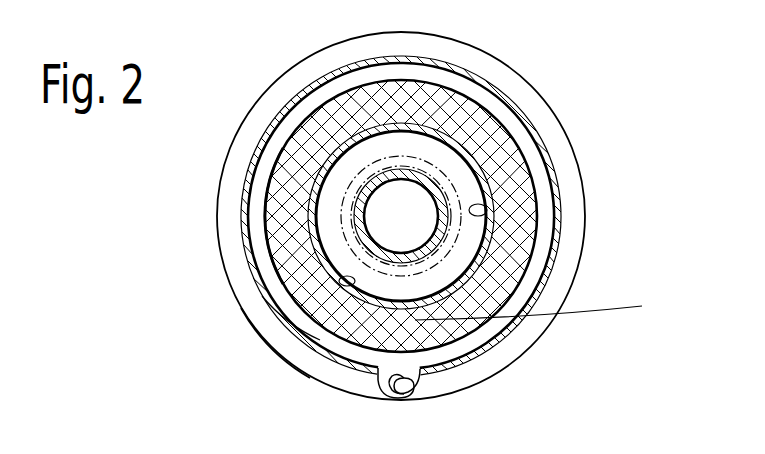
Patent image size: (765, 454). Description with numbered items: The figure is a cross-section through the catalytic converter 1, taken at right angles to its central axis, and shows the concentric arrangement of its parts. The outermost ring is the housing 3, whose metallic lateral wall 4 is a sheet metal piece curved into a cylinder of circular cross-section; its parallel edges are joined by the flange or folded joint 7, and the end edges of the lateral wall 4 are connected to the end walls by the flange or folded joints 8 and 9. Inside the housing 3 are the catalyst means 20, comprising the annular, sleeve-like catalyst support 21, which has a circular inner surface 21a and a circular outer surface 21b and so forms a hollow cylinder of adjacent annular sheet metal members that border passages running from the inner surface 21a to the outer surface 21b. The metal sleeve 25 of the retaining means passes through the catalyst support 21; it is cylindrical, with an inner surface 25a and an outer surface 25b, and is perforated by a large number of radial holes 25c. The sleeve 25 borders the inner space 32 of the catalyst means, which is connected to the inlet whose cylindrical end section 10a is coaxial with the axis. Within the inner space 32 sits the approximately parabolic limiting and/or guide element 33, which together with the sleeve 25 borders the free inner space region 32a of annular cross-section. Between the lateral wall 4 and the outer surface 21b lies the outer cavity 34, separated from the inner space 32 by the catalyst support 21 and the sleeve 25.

The catalytic converter 1 is at (303, 51).
The housing 3 is at (271, 81).
The lateral wall 4 is at (250, 185).
The flange joint and/or folded joint 7 is at (378, 398).
The flange joint and/or folded joint 8 is at (245, 120).
The flange joint and/or folded joint 9 is at (250, 213).
The cylindrical end section 10a is at (455, 178).
The catalyst means 20 is at (258, 241).
The catalyst support 21 is at (268, 275).
The inner surface 21a is at (280, 320).
The outer surface 21b is at (302, 366).
The metal sleeve 25 is at (463, 181).
The inner surface 25a is at (488, 210).
The outer surface 25b is at (493, 239).
The radial holes 25c is at (355, 281).
The inner space of the catalyst means 32 is at (425, 130).
The free inner space region 32a is at (422, 140).
The limiting and/or guide element 33 is at (383, 262).
The outer cavity 34 is at (482, 342).